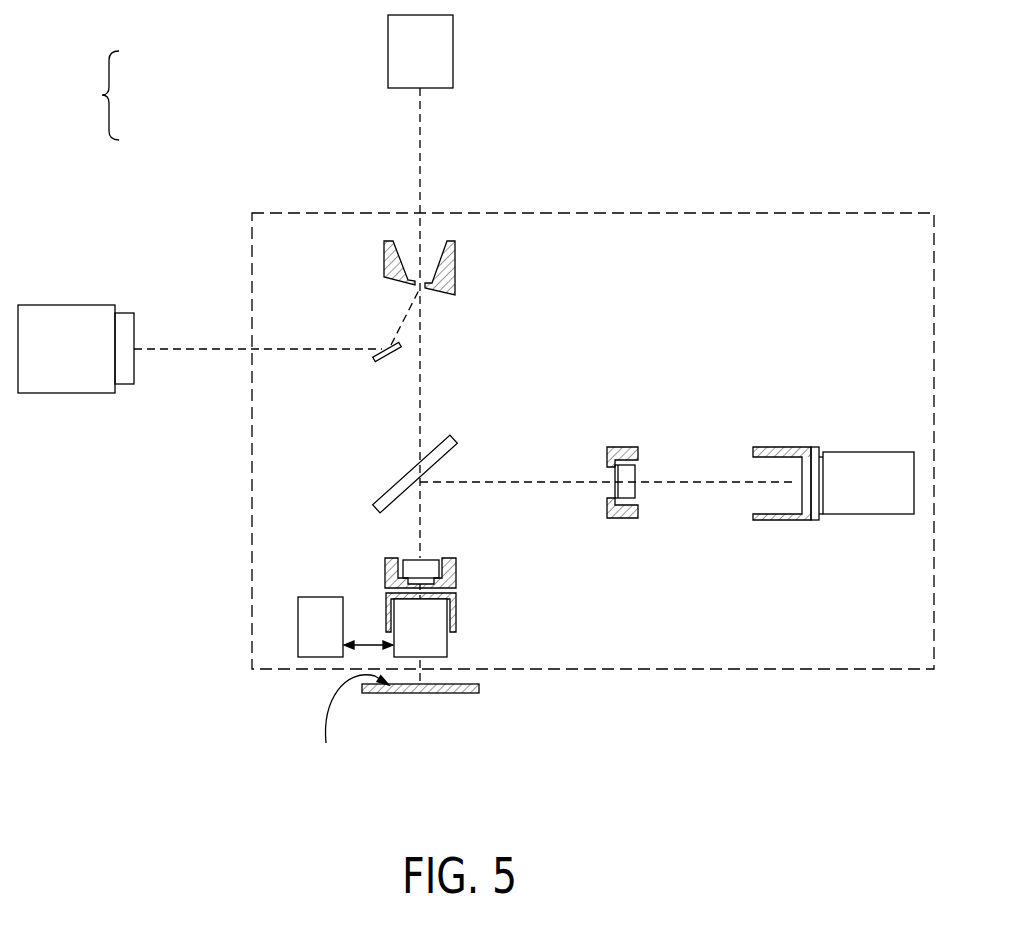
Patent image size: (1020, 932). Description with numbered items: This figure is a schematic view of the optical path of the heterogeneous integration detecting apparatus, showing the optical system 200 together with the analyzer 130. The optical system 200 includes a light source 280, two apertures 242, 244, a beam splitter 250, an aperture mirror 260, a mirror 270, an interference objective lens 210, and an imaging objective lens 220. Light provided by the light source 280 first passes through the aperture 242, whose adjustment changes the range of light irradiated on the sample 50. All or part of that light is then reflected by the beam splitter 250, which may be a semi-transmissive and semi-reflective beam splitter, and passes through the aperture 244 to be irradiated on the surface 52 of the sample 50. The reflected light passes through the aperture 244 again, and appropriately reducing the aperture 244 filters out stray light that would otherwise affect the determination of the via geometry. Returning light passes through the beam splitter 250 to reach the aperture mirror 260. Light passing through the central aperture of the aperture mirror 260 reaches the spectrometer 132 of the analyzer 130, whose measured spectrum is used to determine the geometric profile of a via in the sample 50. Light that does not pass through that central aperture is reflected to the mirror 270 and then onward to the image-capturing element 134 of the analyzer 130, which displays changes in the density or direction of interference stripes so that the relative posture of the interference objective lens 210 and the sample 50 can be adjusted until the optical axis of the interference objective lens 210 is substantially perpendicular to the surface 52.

The analyzer 130 is at (90, 95).
The spectrometer 132 is at (401, 33).
The image-capturing element 134 is at (98, 323).
The optical system 200 is at (824, 210).
The interference objective lens 210 is at (440, 646).
The imaging objective lens 220 is at (320, 597).
The aperture 242 is at (623, 453).
The aperture 244 is at (450, 573).
The beam splitter 250 is at (443, 443).
The aperture mirror 260 is at (450, 268).
The mirror 270 is at (380, 363).
The light source 280 is at (870, 460).
The sample 50 is at (385, 688).
The surface 52 is at (350, 728).